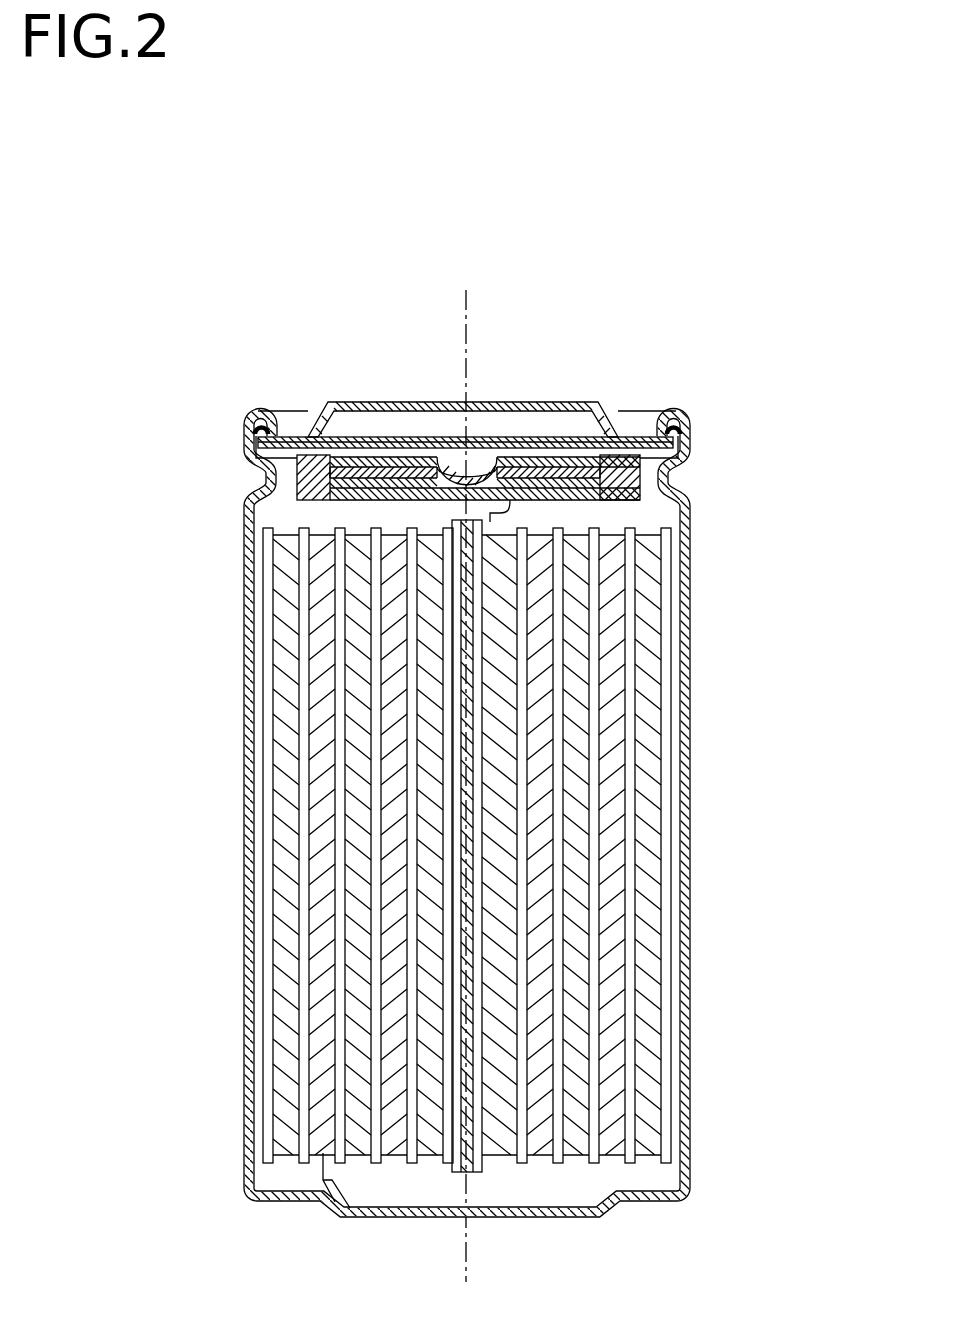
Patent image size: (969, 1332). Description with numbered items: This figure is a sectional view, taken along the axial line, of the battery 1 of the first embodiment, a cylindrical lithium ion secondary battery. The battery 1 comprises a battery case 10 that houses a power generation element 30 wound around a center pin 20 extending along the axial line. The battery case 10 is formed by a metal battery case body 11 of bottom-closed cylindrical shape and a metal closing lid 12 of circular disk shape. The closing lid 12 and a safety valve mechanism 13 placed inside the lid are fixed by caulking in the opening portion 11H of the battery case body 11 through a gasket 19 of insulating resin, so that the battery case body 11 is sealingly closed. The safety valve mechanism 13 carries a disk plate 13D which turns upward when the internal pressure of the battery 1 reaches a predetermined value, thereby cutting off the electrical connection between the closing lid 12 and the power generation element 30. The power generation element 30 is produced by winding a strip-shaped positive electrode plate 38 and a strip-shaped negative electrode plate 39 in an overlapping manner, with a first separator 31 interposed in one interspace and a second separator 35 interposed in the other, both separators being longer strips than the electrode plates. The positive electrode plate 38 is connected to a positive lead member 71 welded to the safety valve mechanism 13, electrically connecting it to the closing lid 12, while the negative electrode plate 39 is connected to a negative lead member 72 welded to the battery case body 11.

The battery 1 is at (676, 341).
The battery case 10 is at (542, 771).
The battery case body 11 is at (690, 604).
The opening portion 11H is at (689, 430).
The closing lid 12 is at (372, 361).
The safety valve mechanism 13 is at (592, 455).
The disk plate 13D is at (492, 456).
The positive lead member 71 is at (524, 476).
The negative lead member 72 is at (338, 1208).
The gasket 19 is at (264, 420).
The center pin 20 is at (476, 918).
The power generation element 30 is at (788, 670).
The first separator 31 is at (632, 812).
The second separator 35 is at (595, 848).
The positive electrode plate 38 is at (612, 686).
The negative electrode plate 39 is at (654, 752).